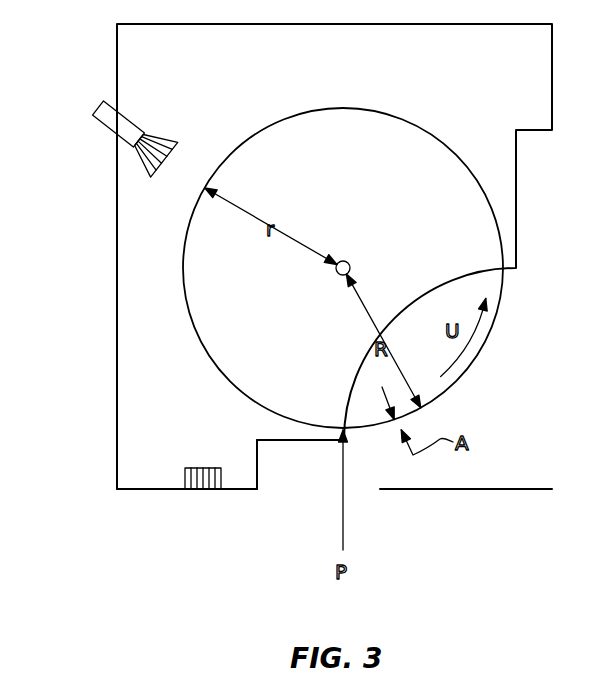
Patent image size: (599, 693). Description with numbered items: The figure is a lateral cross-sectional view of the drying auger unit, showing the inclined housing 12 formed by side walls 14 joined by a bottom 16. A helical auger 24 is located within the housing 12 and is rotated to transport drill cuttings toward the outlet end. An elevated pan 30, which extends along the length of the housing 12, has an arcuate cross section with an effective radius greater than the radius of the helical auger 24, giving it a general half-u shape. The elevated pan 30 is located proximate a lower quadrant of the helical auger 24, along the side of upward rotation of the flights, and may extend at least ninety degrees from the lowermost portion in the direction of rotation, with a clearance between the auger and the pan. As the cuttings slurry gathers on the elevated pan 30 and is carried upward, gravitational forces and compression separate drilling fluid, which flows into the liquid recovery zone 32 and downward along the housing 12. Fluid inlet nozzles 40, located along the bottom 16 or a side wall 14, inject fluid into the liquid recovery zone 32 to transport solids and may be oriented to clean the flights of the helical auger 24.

The inclined housing 12 is at (116, 53).
The side walls 14 is at (117, 208).
The bottom 16 is at (458, 490).
The helical auger 24 is at (295, 118).
The elevated pan 30 is at (292, 442).
The liquid recovery zone 32 is at (163, 472).
The fluid inlet nozzles 40 is at (100, 108).